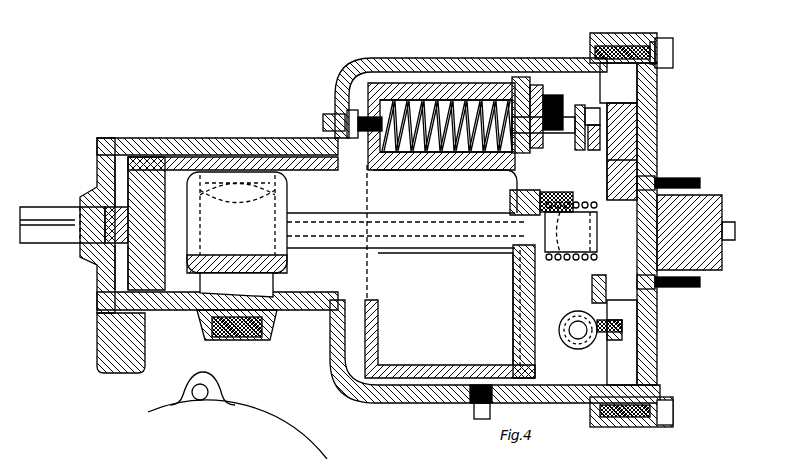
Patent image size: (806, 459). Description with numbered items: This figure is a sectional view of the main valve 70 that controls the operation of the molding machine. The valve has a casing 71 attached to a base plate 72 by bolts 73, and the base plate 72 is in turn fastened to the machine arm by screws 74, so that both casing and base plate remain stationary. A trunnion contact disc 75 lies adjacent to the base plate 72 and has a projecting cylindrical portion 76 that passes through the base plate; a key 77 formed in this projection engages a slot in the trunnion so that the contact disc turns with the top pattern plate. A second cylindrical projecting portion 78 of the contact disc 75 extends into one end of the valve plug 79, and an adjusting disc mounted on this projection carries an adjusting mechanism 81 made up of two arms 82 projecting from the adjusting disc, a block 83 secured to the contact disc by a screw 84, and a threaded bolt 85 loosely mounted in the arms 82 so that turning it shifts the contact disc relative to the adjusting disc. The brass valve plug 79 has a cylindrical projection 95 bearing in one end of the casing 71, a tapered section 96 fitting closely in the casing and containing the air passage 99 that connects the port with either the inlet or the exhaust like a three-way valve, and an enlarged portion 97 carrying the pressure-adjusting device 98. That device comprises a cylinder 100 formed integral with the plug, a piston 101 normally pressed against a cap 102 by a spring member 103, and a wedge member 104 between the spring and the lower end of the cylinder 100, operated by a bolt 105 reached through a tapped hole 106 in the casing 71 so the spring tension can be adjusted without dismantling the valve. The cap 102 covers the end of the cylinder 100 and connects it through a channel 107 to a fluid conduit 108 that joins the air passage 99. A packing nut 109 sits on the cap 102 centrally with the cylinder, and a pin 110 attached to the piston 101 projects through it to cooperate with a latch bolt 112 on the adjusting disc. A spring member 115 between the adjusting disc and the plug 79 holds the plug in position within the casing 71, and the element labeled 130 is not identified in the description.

The valve 70 is at (456, 83).
The casing 71 is at (508, 83).
The base plate 72 is at (658, 118).
The bolts 73 is at (673, 48).
The screws 74 is at (706, 174).
The trunnion contact disc 75 is at (637, 113).
The projecting cylindrical portion 76 is at (720, 196).
The key 77 is at (735, 232).
The second cylindrical projecting portion 78 is at (565, 260).
The valve plug 79 is at (383, 337).
The adjusting mechanism 81 is at (567, 330).
The arms 82 is at (595, 265).
The block 83 is at (582, 345).
The screw 84 is at (624, 345).
The threaded bolt 85 is at (572, 342).
The cylindrical projection 95 is at (76, 243).
The tapered section 96 is at (320, 293).
The enlarged portion 97 is at (458, 363).
The pressure-adjusting device 98 is at (408, 100).
The air passage 99 is at (268, 287).
The cylinder 100 is at (445, 191).
The piston 101 is at (528, 83).
The cap 102 is at (552, 95).
The spring member 103 is at (473, 83).
The wedge member 104 is at (380, 82).
The bolt 105 is at (347, 116).
The tapped hole 106 is at (323, 124).
The channel 107 is at (512, 197).
The fluid conduit 108 is at (430, 227).
The packing nut 109 is at (580, 108).
The pin 110 is at (596, 120).
The latch bolt 112 is at (607, 138).
The spring member 115 is at (586, 260).
The terminal 130 is at (614, 110).